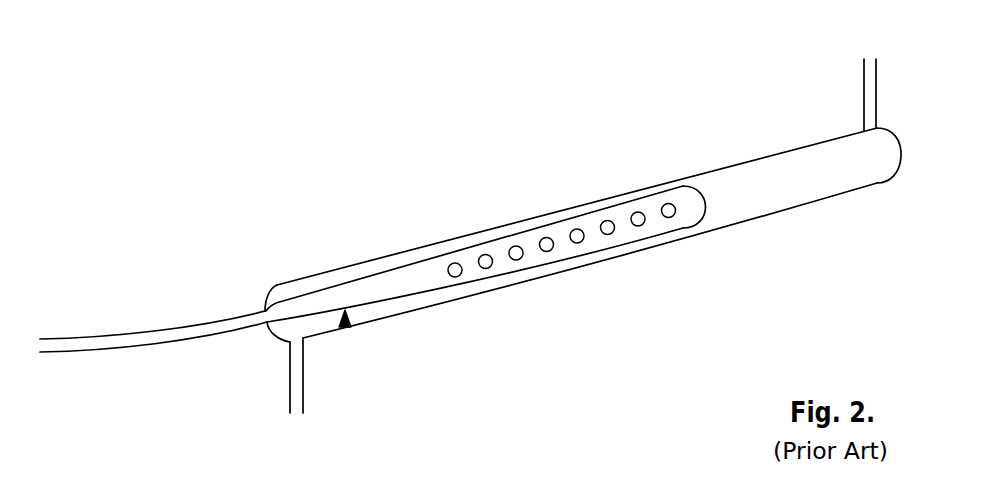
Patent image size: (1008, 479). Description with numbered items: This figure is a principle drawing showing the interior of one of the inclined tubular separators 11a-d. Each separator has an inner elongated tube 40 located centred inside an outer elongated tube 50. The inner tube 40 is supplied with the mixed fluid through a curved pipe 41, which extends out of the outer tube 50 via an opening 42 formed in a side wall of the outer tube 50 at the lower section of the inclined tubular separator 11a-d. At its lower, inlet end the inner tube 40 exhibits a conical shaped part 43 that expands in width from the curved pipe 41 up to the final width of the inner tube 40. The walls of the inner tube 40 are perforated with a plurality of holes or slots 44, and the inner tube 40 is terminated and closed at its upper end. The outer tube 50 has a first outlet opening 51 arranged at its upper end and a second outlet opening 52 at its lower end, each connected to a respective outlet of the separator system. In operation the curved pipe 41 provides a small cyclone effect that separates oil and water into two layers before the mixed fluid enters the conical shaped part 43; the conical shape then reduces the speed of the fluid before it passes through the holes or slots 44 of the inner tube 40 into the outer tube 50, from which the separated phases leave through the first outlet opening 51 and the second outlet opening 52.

The inclined tubular separators 11a-d is at (443, 222).
The inner elongated tube 40 is at (528, 230).
The curved pipe 41 is at (153, 332).
The opening 42 is at (263, 308).
The conical shaped part 43 is at (347, 327).
The holes or slots 44 is at (453, 278).
The outer elongated tube 50 is at (636, 188).
The first outlet opening 51 is at (857, 90).
The second outlet opening 52 is at (290, 365).